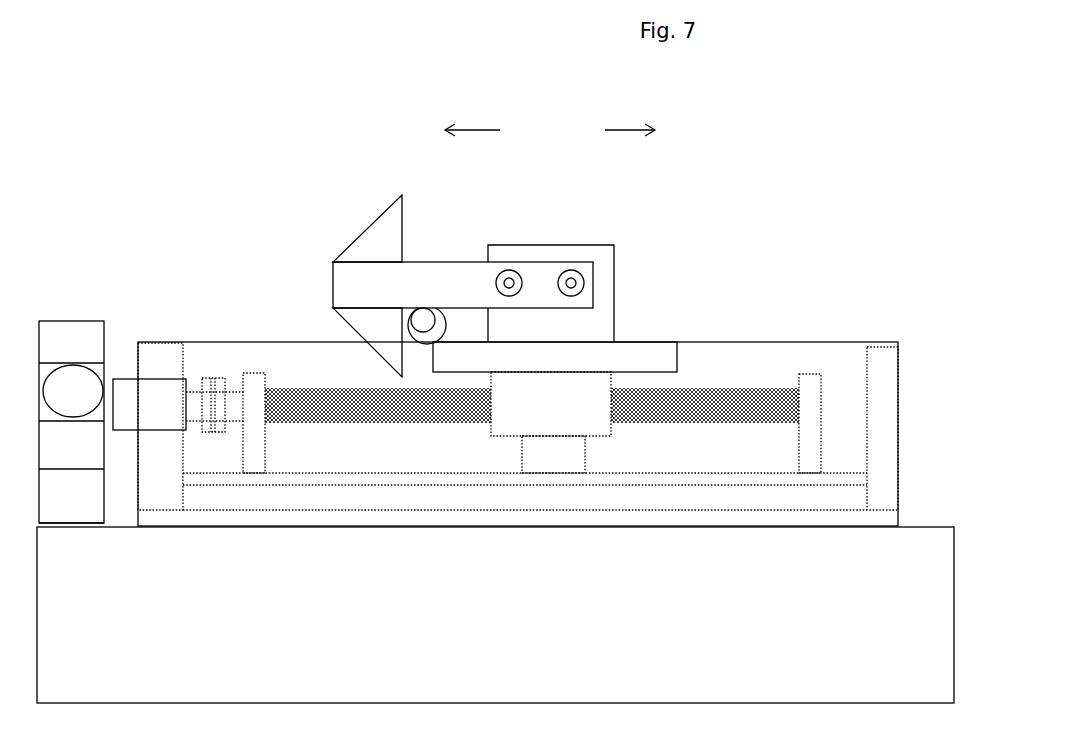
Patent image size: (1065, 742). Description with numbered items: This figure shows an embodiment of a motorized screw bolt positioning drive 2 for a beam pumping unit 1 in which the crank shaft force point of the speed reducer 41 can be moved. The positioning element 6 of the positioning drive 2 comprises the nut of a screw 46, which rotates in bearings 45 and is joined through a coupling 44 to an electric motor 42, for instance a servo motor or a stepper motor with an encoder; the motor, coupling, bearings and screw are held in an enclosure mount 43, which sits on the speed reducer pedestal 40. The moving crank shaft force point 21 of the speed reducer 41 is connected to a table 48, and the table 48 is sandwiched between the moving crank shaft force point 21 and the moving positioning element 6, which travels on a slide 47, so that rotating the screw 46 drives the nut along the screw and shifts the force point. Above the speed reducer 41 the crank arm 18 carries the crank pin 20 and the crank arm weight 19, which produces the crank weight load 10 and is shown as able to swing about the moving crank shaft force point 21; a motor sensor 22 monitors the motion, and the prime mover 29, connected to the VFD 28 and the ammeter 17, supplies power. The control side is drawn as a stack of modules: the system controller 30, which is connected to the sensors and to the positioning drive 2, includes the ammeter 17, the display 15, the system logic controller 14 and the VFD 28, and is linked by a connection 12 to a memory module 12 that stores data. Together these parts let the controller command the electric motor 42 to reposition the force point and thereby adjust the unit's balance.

The movable unit 1 is at (618, 280).
The positioning drive 2 is at (537, 543).
The positioning element 6 is at (558, 417).
The crank weight load 10 is at (345, 185).
The memory module 12 is at (98, 369).
The system logic controller 14 is at (60, 458).
The display 15 is at (60, 403).
The ammeter 17 is at (60, 355).
The crank arm 18 is at (343, 284).
The crank arm weight 19 is at (382, 225).
The crank pin 20 is at (507, 279).
The moving crank shaft force point 21 is at (567, 280).
The motor sensor 22 is at (422, 318).
The VFD 28 is at (60, 507).
The prime mover 29 is at (406, 343).
The system controller 30 is at (63, 305).
The speed reducer pedestal 40 is at (657, 632).
The speed reducer 41 is at (599, 264).
The electric motor 42 is at (135, 417).
The enclosure mount 43 is at (158, 486).
The coupling 44 is at (215, 420).
The bearing 45 is at (253, 458).
The screw 46 is at (357, 402).
The slide 47 is at (537, 460).
The table 48 is at (668, 355).